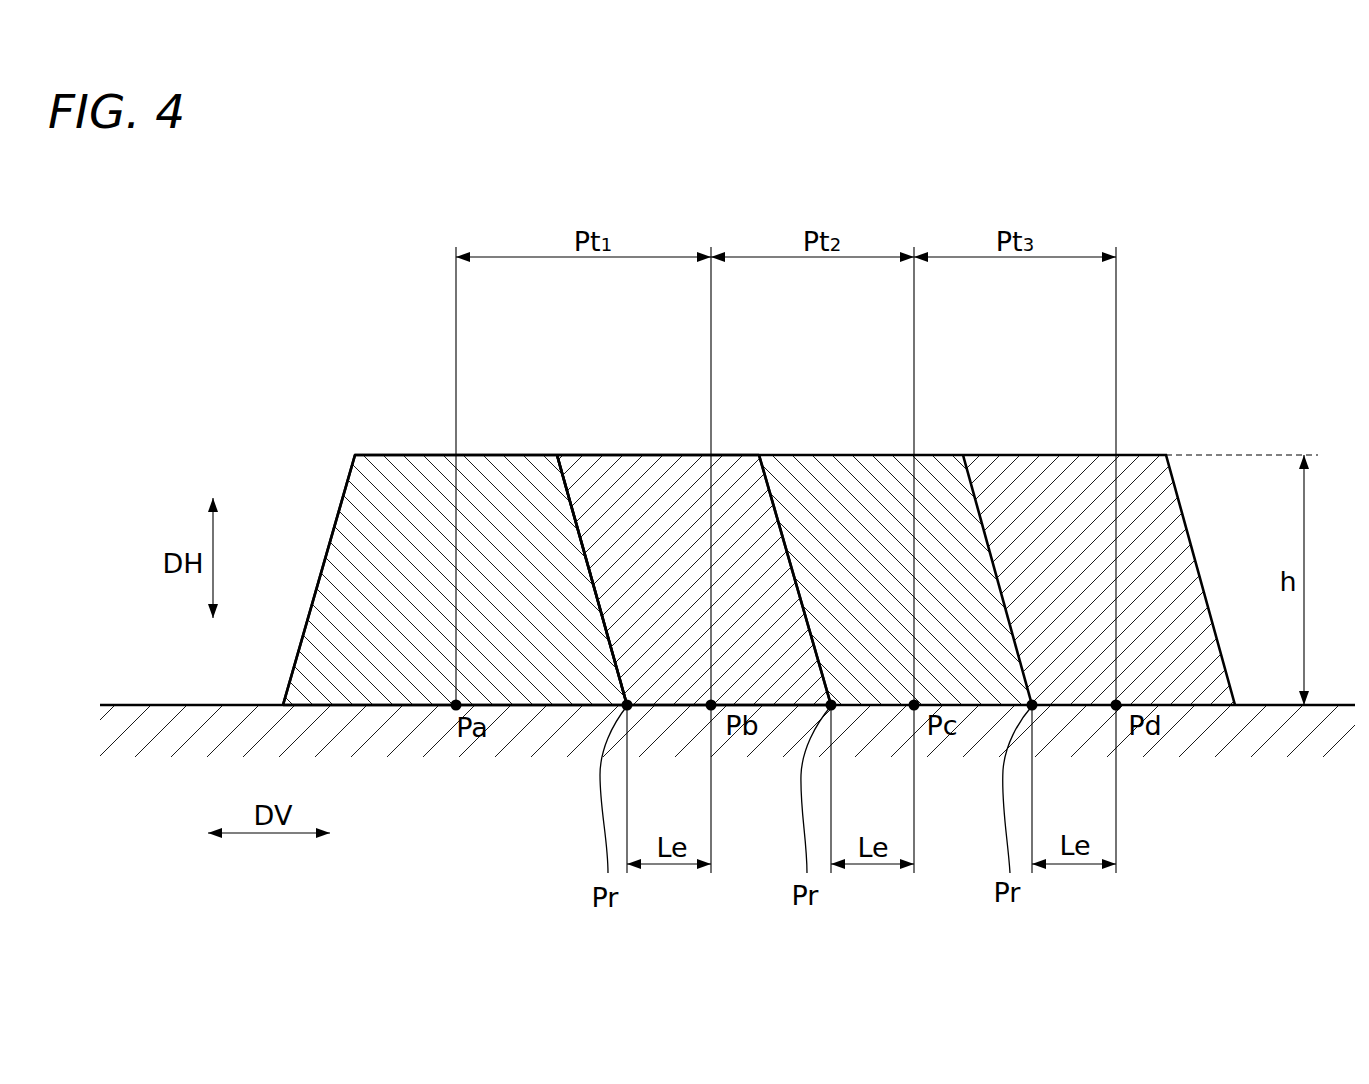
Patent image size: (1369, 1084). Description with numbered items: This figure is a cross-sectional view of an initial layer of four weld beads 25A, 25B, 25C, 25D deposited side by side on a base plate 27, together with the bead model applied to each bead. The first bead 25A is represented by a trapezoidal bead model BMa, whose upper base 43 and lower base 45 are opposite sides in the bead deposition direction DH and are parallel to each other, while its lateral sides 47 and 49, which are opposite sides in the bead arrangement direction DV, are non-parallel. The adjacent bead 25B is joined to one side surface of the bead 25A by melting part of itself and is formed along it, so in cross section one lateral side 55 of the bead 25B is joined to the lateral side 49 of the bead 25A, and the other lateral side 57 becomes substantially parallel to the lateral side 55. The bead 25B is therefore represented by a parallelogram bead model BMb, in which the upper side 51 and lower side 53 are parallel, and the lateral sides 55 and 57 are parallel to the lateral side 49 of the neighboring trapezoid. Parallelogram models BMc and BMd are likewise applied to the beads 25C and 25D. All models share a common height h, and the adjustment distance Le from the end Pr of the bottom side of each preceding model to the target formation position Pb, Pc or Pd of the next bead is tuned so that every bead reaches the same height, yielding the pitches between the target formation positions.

The bead 25A is at (398, 473).
The bead 25B is at (670, 468).
The bead 25C is at (845, 473).
The bead 25D is at (1042, 477).
The base plate 27 is at (1232, 813).
The upper base 43 is at (505, 455).
The lower base 45 is at (533, 706).
The lateral side 47 is at (340, 510).
The lateral side 49 is at (578, 502).
The upper side 51 is at (737, 455).
The lower side 53 is at (778, 706).
The lateral side 55 is at (602, 622).
The lateral side 57 is at (803, 613).